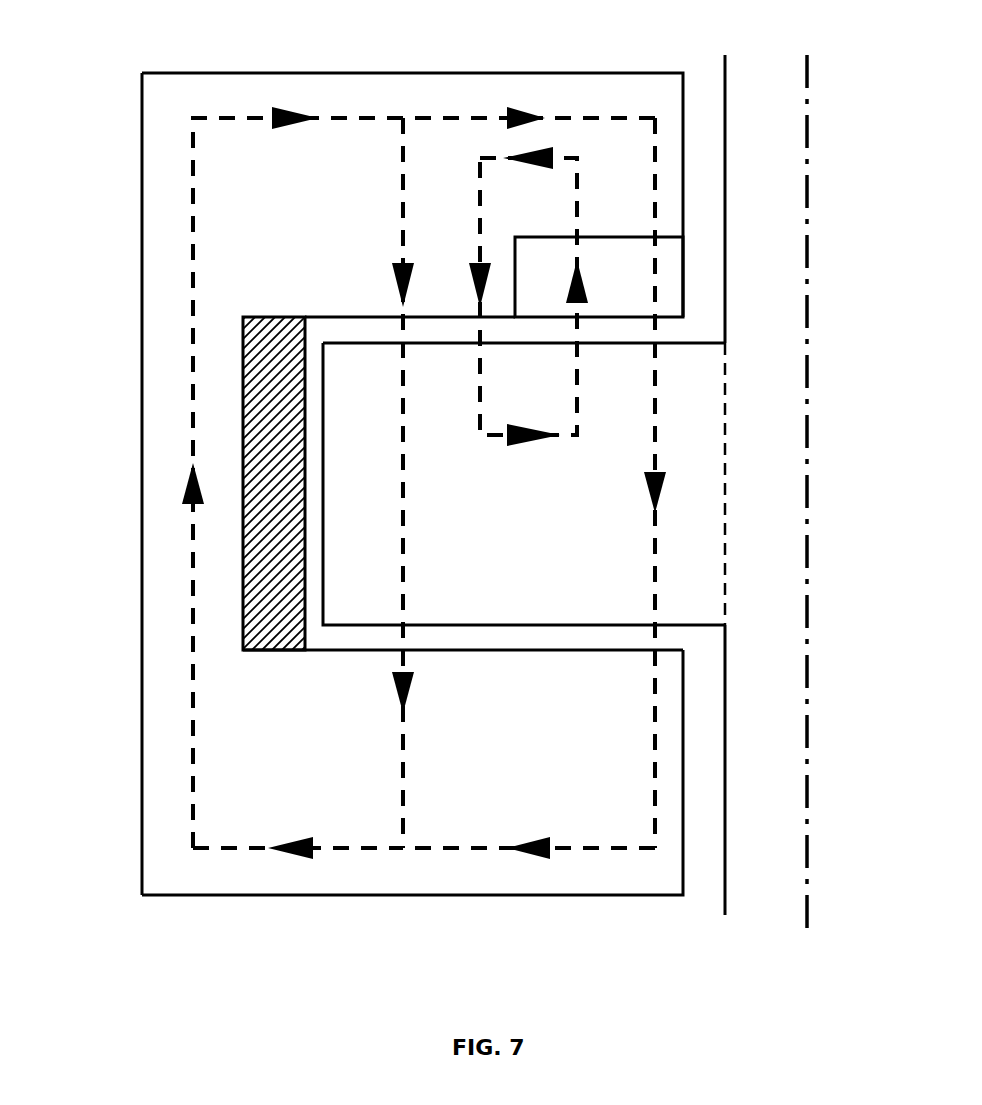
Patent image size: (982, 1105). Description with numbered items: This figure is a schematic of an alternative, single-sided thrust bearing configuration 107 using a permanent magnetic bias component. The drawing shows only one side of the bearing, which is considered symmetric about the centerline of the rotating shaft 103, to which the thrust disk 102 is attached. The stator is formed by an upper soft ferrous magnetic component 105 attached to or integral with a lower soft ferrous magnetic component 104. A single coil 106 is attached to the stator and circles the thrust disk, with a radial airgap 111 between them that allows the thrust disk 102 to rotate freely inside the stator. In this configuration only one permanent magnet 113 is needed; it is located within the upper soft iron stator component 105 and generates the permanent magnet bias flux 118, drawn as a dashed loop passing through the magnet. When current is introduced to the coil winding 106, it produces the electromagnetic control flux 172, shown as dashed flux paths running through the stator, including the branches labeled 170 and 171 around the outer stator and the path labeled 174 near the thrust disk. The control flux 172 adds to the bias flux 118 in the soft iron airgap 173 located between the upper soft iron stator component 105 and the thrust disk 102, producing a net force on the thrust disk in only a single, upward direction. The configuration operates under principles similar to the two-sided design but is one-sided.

The thrust disk 102 is at (690, 427).
The rotating shaft 103 is at (820, 518).
The lower soft ferrous magnetic component 104 is at (502, 880).
The upper soft ferrous magnetic component 105 is at (527, 93).
The coil 106 is at (280, 322).
The thrust bearing configuration 107 is at (108, 205).
The radial airgap 111 is at (313, 487).
The permanent magnet 113 is at (596, 248).
The permanent magnet bias flux 118 is at (472, 245).
The main magnetic flux path 170 is at (193, 563).
The flux path right branch 171 is at (625, 118).
The electromagnetic control flux 172 is at (398, 228).
The soft iron airgap 173 is at (377, 335).
The lower air gap 174 is at (605, 335).